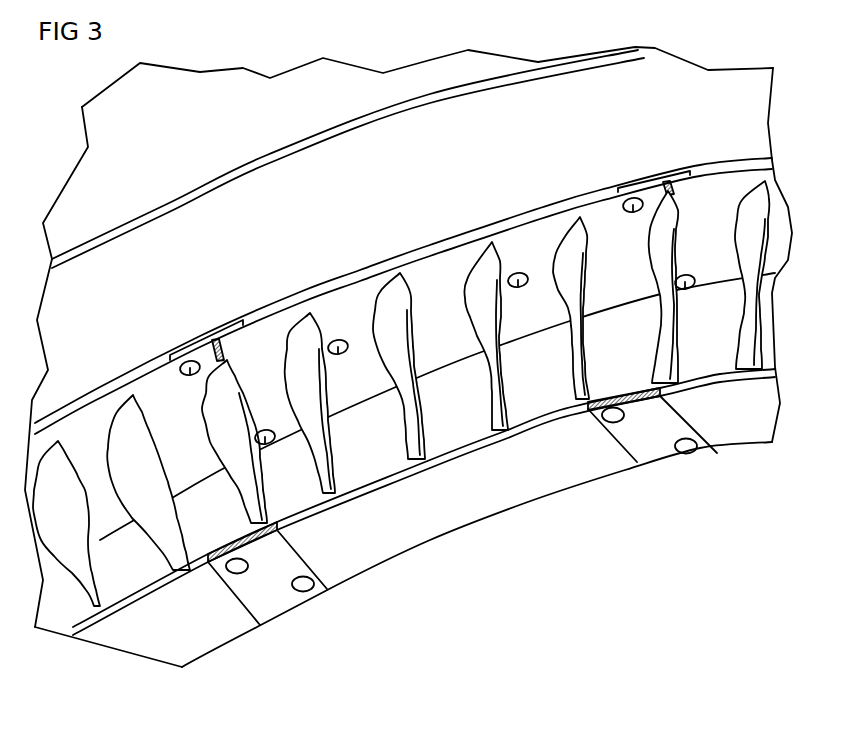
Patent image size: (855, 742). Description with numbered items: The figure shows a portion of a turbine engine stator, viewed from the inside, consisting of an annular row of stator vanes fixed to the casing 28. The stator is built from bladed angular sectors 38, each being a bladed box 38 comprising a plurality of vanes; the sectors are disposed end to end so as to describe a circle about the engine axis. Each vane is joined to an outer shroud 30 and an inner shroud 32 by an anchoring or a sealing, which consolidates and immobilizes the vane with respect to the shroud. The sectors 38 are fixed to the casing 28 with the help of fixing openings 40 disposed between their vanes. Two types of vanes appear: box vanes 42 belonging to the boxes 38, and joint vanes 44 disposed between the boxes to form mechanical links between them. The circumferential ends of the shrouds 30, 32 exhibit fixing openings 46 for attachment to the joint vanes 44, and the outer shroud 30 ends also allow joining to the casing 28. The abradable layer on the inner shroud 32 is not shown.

The casing 28 is at (282, 197).
The outer shroud 30 is at (145, 398).
The inner shroud 32 is at (163, 653).
The bladed angular sector 38 is at (218, 665).
The fixing opening 40 is at (340, 356).
The box vane 42 is at (173, 558).
The joint vane 44 is at (295, 615).
The fixing opening 46 is at (188, 378).